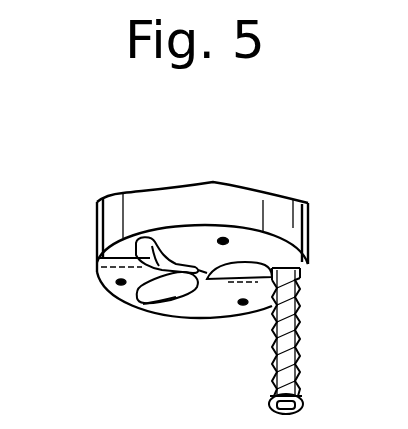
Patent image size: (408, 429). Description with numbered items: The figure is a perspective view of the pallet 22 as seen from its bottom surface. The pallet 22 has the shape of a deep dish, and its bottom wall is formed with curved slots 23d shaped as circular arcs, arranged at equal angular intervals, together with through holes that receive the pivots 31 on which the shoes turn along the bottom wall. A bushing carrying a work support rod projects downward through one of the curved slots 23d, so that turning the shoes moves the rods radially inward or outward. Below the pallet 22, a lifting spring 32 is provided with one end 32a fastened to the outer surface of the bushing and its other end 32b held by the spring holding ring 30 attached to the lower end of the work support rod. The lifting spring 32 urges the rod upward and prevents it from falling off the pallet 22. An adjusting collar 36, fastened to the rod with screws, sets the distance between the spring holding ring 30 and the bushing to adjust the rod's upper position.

The pallet 22 is at (97, 220).
The pivots 31 is at (223, 236).
The curved slot 23d is at (170, 305).
The other end of lifting spring 32b is at (309, 263).
The adjusting collar 36 is at (303, 334).
The lifting spring 32 is at (293, 334).
The one end of lifting spring 32a is at (304, 405).
The spring holding ring 30 is at (268, 405).